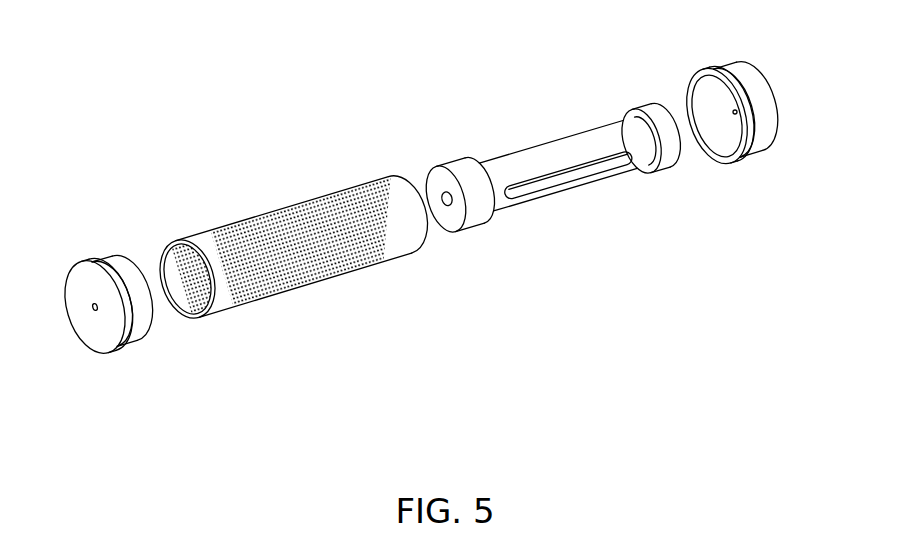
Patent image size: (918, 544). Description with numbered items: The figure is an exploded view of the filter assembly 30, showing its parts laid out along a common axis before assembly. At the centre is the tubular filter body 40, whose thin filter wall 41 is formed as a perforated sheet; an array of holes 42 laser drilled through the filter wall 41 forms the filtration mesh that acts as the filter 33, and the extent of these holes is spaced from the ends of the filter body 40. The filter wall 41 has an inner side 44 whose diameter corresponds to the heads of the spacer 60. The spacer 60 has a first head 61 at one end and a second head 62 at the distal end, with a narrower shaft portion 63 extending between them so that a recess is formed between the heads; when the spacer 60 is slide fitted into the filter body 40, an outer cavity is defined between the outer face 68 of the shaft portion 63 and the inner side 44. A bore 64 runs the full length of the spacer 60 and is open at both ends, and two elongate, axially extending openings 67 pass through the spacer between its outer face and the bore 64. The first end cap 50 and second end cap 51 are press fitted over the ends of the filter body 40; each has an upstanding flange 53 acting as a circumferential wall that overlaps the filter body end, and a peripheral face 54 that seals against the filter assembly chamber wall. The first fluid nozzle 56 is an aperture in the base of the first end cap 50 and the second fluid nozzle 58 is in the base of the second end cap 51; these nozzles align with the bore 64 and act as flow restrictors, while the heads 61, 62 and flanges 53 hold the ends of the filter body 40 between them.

The filter assembly 30 is at (355, 120).
The filter 33 is at (245, 228).
The filter body 40 is at (278, 351).
The filter wall 41 is at (300, 214).
The array of holes 42 is at (350, 277).
The inner side 44 is at (192, 308).
The first end cap 50 is at (107, 421).
The second end cap 51 is at (776, 172).
The upstanding flange 53 is at (137, 340).
The peripheral face 54 is at (100, 255).
The first fluid nozzle 56 is at (92, 311).
The second fluid nozzle 58 is at (733, 114).
The spacer 60 is at (516, 291).
The first head 61 is at (460, 195).
The second head 62 is at (651, 138).
The shaft portion 63 is at (570, 162).
The bore 64 is at (447, 199).
The openings 67 is at (568, 175).
The outer face 68 is at (551, 156).